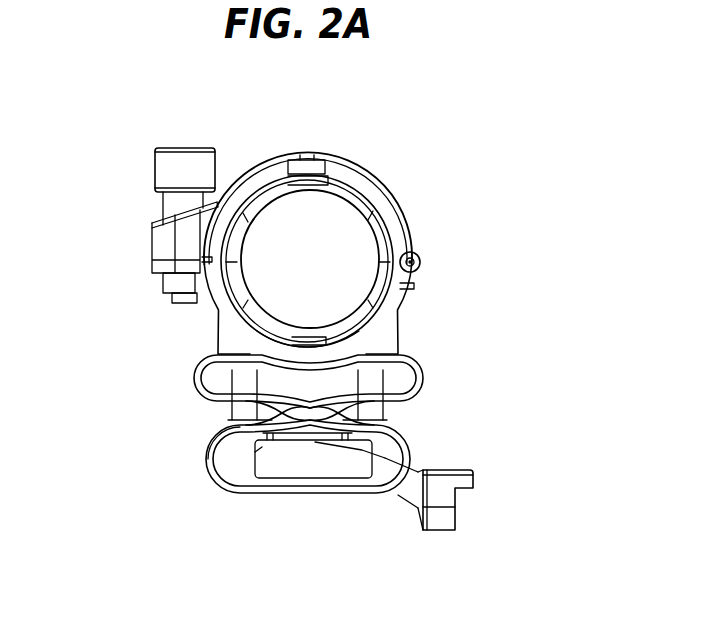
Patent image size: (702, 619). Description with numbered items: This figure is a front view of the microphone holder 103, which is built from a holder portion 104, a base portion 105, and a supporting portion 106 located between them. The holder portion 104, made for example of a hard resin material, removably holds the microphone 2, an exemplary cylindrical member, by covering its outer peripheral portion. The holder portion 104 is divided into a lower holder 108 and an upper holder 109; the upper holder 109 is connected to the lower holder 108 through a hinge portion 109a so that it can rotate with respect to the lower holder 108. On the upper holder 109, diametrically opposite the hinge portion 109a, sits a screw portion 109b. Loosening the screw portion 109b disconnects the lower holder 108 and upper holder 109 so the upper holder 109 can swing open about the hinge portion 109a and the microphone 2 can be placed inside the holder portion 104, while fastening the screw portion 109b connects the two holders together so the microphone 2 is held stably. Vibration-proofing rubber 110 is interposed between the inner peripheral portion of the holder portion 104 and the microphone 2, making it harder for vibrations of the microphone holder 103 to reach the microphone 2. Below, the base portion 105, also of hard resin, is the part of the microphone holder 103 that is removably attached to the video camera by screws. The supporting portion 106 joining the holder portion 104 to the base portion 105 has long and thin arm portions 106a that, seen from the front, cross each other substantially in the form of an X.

The microphone 2 is at (338, 212).
The microphone holder 103 is at (225, 515).
The holder portion 104 is at (323, 153).
The base portion 105 is at (443, 498).
The supporting portion 106 is at (303, 497).
The arm portions 106a is at (210, 443).
The lower holder 108 is at (393, 309).
The upper holder 109 is at (353, 177).
The hinge portion 109a is at (418, 258).
The screw portion 109b is at (183, 242).
The vibration-proofing rubber 110 is at (267, 195).